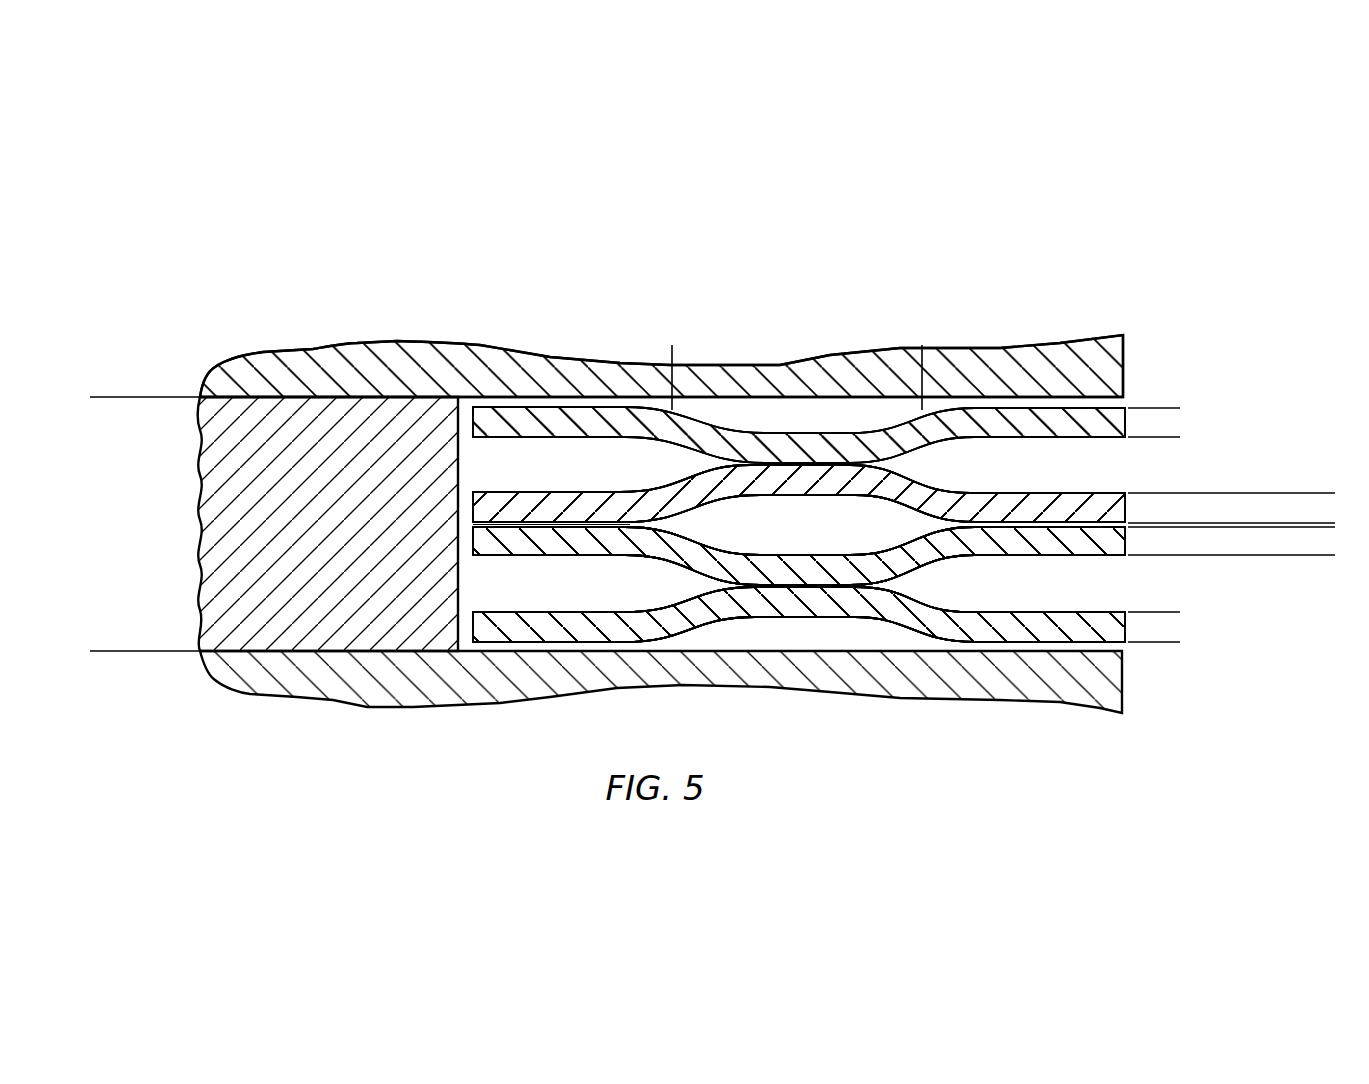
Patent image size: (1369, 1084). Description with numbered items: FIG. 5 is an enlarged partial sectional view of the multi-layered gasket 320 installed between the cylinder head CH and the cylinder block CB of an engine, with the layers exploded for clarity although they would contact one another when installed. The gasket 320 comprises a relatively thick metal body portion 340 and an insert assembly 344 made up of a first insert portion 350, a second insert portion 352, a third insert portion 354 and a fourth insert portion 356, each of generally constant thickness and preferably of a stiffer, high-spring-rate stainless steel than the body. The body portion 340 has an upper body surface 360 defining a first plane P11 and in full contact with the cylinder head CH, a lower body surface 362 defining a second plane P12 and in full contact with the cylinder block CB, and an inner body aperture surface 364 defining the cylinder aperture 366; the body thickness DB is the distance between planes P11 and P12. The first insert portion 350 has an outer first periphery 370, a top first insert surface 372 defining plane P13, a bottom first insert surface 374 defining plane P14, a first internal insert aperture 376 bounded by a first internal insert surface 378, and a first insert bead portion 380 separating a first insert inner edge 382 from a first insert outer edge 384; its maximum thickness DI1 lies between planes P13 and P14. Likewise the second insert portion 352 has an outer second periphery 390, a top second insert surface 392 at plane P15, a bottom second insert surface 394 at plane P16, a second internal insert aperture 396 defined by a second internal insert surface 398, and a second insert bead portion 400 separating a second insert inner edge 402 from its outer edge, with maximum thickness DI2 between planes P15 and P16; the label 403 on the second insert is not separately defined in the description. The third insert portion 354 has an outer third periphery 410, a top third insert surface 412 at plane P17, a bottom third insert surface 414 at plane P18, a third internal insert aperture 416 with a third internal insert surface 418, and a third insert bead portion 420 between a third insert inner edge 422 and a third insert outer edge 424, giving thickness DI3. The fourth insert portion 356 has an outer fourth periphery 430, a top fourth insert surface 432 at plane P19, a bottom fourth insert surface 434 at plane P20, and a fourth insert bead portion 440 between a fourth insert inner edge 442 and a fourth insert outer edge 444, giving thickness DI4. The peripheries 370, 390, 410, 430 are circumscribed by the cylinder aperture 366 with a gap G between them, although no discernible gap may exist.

The gasket 320 is at (1073, 297).
The body portion 340 is at (205, 528).
The insert assembly 344 is at (1259, 429).
The first insert portion 350 is at (1135, 399).
The second insert portion 352 is at (1110, 500).
The third insert portion 354 is at (1132, 557).
The fourth insert portion 356 is at (1018, 600).
The upper body surface 360 is at (322, 392).
The lower body surface 362 is at (313, 655).
The inner body aperture surface 364 is at (458, 560).
The cylinder aperture 366 is at (463, 500).
The outer first periphery 370 is at (470, 405).
The top first insert surface 372 is at (662, 403).
The bottom first insert surface 374 is at (622, 440).
The first internal insert aperture 376 is at (1141, 420).
The first internal insert surface 378 is at (1130, 411).
The first insert bead portion 380 is at (922, 340).
The first insert inner edge 382 is at (1040, 402).
The first insert outer edge 384 is at (550, 410).
The outer second periphery 390 is at (467, 490).
The top second insert surface 392 is at (582, 486).
The bottom second insert surface 394 is at (639, 524).
The second internal insert aperture 396 is at (1145, 503).
The second internal insert surface 398 is at (1135, 512).
The second insert bead portion 400 is at (793, 487).
The second insert inner edge 402 is at (1010, 500).
The second shim transition 403 is at (612, 507).
The outer third periphery 410 is at (465, 545).
The top third insert surface 412 is at (524, 527).
The bottom third insert surface 414 is at (603, 527).
The third internal insert aperture 416 is at (1145, 537).
The third internal insert surface 418 is at (1131, 545).
The third insert bead portion 420 is at (790, 560).
The third insert inner edge 422 is at (1060, 540).
The third insert outer edge 424 is at (563, 545).
The outer fourth periphery 430 is at (478, 652).
The top fourth insert surface 432 is at (622, 608).
The bottom fourth insert surface 434 is at (660, 645).
The fourth insert bead portion 440 is at (830, 623).
The fourth insert inner edge 442 is at (1097, 623).
The fourth insert outer edge 444 is at (525, 622).
The first insert maximum thickness DI1 is at (1172, 410).
The second insert maximum thickness DI2 is at (1326, 495).
The third insert maximum thickness DI3 is at (1326, 529).
The fourth insert maximum thickness DI4 is at (1172, 614).
The body thickness DB is at (99, 399).
The first plane P11 is at (152, 396).
The second plane P12 is at (150, 652).
The top first insert plane P13 is at (1167, 406).
The bottom first insert plane P14 is at (1157, 438).
The top second insert plane P15 is at (1268, 492).
The bottom second insert plane P16 is at (1298, 522).
The top third insert plane P17 is at (1267, 528).
The bottom third insert plane P18 is at (1307, 557).
The top fourth insert plane P19 is at (1167, 611).
The bottom fourth insert plane P20 is at (1162, 643).
The gap G is at (465, 513).
The cylinder head CH is at (872, 370).
The cylinder block CB is at (870, 690).